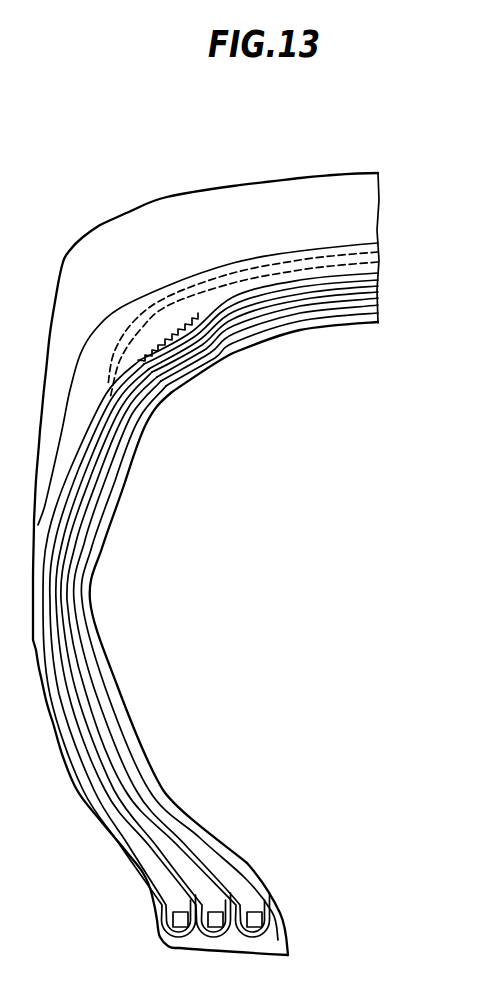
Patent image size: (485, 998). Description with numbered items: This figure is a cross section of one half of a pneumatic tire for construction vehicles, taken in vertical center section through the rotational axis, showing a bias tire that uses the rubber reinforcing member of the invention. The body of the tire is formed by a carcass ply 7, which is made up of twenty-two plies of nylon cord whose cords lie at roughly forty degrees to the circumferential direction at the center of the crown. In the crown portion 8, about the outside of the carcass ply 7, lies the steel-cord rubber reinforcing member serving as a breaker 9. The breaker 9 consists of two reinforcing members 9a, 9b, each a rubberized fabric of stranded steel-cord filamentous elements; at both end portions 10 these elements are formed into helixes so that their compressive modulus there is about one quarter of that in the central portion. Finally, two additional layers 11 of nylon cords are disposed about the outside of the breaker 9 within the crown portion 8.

The carcass ply 7 is at (87, 673).
The crown portion 8 is at (356, 172).
The breaker 9 is at (316, 272).
The reinforcing member 9a is at (275, 283).
The reinforcing member 9b is at (250, 300).
The end portions 10 is at (203, 323).
The additional layers 11 is at (375, 261).